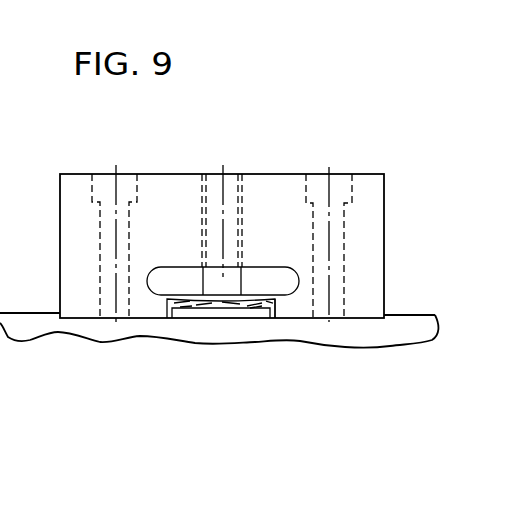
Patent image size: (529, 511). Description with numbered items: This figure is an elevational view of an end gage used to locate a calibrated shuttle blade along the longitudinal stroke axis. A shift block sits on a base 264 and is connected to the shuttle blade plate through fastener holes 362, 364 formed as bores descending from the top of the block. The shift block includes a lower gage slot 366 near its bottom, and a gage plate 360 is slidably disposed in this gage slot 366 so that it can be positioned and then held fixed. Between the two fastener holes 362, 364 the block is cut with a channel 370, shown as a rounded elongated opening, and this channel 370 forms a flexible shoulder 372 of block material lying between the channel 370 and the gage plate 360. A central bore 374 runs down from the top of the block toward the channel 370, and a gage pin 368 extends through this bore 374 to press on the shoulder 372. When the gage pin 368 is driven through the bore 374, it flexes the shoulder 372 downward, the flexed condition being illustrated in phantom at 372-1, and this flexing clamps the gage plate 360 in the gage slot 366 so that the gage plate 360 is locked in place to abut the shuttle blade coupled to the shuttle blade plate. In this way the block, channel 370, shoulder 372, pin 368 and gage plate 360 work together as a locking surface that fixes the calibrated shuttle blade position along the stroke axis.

The substrate 264 is at (422, 313).
The gage plate 360 is at (193, 312).
The fastener hole 362 is at (108, 170).
The fastener hole 364 is at (337, 170).
The lower gage slot 366 is at (276, 302).
The gage pin 368 is at (233, 283).
The channel 370 is at (267, 267).
The flexible shoulder 372 is at (193, 298).
The flexed shoulder (phantom) 372-1 is at (227, 303).
The bore 374 is at (215, 170).